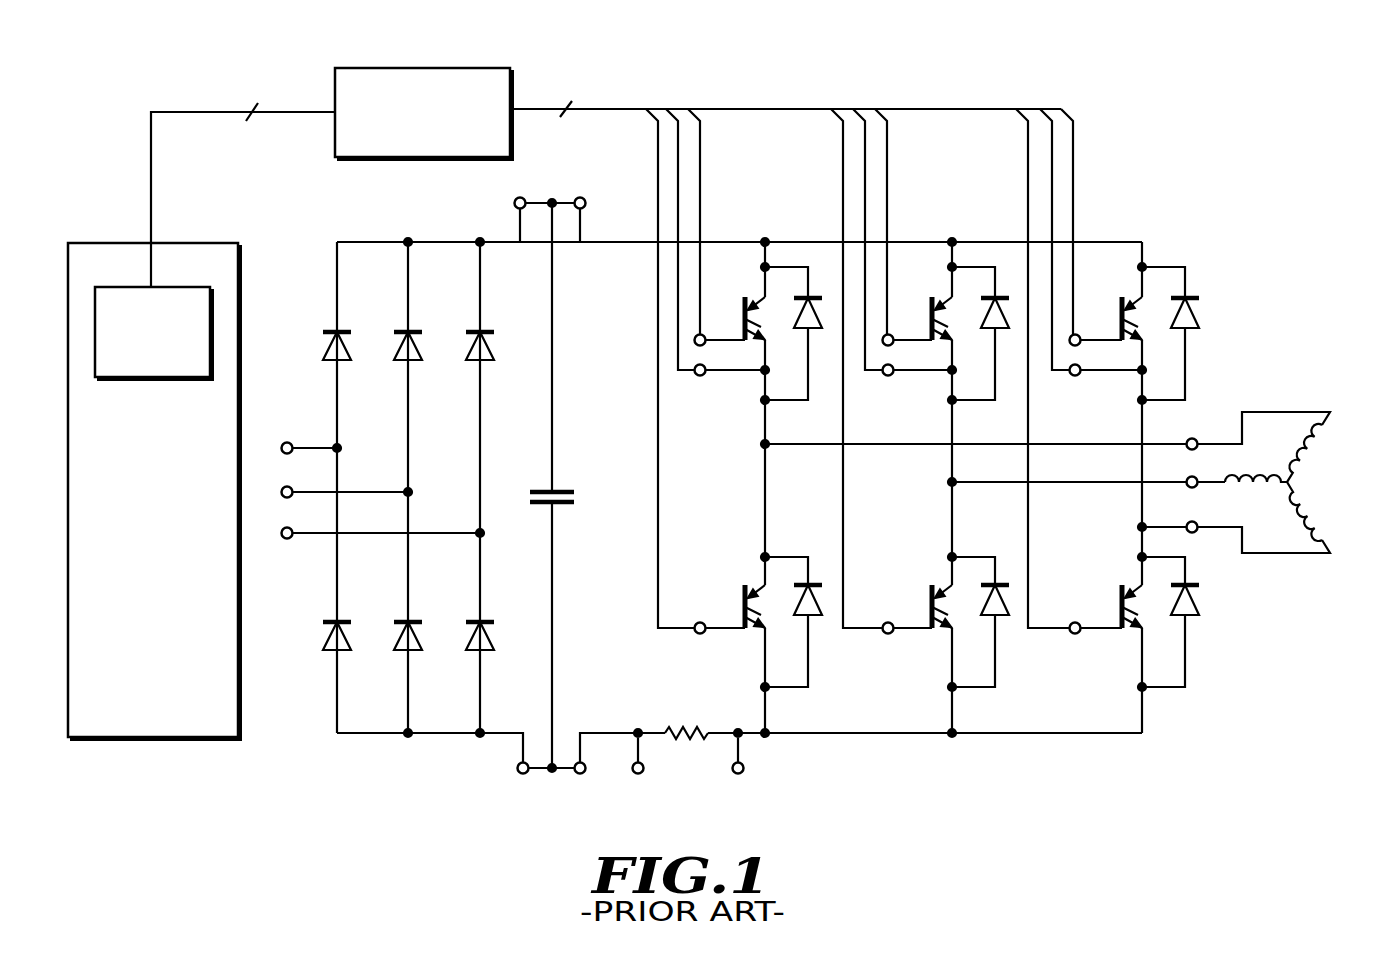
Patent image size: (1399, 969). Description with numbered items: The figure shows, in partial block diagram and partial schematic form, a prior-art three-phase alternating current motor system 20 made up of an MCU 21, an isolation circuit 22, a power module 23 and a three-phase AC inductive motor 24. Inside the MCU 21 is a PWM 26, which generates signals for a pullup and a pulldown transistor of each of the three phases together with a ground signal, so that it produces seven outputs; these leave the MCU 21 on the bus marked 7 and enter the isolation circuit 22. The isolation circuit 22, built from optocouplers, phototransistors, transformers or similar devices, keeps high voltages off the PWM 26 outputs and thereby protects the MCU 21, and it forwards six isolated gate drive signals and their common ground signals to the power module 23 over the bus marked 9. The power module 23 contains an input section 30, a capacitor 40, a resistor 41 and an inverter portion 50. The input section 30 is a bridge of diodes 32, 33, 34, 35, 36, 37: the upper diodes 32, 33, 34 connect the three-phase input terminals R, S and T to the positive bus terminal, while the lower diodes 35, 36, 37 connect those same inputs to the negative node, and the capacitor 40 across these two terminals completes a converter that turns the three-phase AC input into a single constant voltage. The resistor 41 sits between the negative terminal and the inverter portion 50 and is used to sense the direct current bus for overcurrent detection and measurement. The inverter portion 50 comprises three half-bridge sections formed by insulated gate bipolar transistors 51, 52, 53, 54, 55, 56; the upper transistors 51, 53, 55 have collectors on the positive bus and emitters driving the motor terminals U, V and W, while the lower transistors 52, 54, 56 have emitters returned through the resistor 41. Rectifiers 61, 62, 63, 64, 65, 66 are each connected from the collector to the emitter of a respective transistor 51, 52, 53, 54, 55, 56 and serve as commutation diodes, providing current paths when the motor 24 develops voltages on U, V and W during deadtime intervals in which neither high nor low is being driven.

The PWM signal lines 7 is at (243, 183).
The isolated gate drive lines 9 is at (791, 352).
The system 20 is at (468, 851).
The MCU 21 is at (211, 634).
The isolation circuit 22 is at (458, 68).
The power module 23 is at (1232, 308).
The three-phase AC inductive motor 24 is at (1332, 502).
The PWM 26 is at (172, 287).
The input section 30 is at (397, 495).
The diode 32 is at (345, 358).
The diode 33 is at (416, 358).
The diode 34 is at (488, 358).
The diode 35 is at (345, 650).
The diode 36 is at (416, 650).
The diode 37 is at (488, 650).
The capacitor 40 is at (568, 505).
The resistor 41 is at (691, 728).
The inverter portion 50 is at (967, 527).
The insulated gate bipolar transistor 51 is at (745, 300).
The insulated gate bipolar transistor 52 is at (745, 588).
The insulated gate bipolar transistor 53 is at (932, 300).
The insulated gate bipolar transistor 54 is at (932, 588).
The insulated gate bipolar transistor 55 is at (1122, 300).
The insulated gate bipolar transistor 56 is at (1122, 588).
The rectifier 61 is at (804, 322).
The rectifier 62 is at (805, 613).
The rectifier 63 is at (991, 322).
The rectifier 64 is at (992, 613).
The rectifier 65 is at (1197, 322).
The rectifier 66 is at (1196, 610).